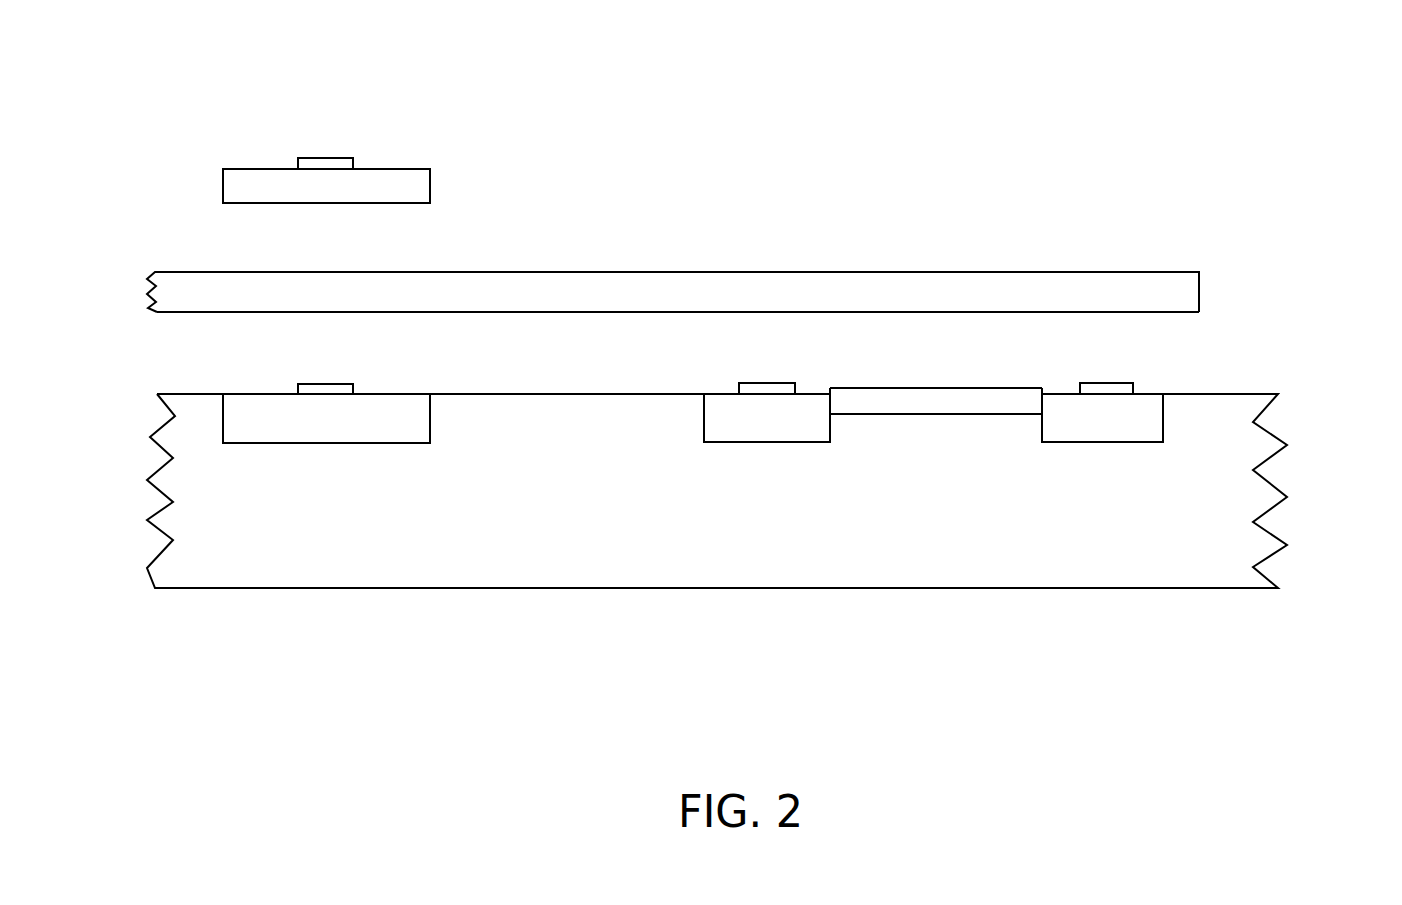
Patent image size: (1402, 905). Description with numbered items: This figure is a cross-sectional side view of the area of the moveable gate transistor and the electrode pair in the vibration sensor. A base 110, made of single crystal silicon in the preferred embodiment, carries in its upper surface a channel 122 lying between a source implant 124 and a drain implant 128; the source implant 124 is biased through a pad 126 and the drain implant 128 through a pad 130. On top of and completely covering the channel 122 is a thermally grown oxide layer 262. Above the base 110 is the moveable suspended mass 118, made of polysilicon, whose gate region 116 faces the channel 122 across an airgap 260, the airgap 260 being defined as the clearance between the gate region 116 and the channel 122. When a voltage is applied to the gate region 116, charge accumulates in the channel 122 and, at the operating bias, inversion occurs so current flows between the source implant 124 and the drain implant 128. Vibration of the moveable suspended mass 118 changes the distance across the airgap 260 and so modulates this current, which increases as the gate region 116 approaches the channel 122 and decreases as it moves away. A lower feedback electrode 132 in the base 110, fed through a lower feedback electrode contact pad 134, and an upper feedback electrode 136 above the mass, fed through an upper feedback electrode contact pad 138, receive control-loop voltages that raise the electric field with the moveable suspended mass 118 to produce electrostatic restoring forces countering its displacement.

The base 110 is at (740, 523).
The gate region 116 is at (992, 282).
The moveable suspended mass 118 is at (195, 287).
The channel 122 is at (913, 407).
The source implant 124 is at (817, 443).
The pad 126 is at (777, 380).
The drain implant 128 is at (1148, 432).
The pad 130 is at (1100, 378).
The lower feedback electrode 132 is at (280, 433).
The lower feedback electrode contact pad 134 is at (333, 394).
The upper feedback electrode 136 is at (250, 187).
The upper feedback electrode contact pad 138 is at (343, 160).
The airgap 260 is at (907, 355).
The thermally grown oxide layer 262 is at (985, 390).